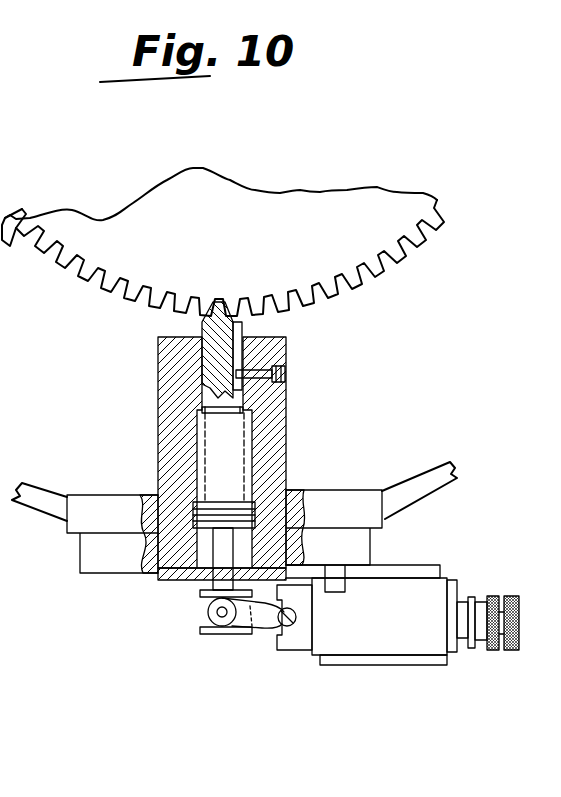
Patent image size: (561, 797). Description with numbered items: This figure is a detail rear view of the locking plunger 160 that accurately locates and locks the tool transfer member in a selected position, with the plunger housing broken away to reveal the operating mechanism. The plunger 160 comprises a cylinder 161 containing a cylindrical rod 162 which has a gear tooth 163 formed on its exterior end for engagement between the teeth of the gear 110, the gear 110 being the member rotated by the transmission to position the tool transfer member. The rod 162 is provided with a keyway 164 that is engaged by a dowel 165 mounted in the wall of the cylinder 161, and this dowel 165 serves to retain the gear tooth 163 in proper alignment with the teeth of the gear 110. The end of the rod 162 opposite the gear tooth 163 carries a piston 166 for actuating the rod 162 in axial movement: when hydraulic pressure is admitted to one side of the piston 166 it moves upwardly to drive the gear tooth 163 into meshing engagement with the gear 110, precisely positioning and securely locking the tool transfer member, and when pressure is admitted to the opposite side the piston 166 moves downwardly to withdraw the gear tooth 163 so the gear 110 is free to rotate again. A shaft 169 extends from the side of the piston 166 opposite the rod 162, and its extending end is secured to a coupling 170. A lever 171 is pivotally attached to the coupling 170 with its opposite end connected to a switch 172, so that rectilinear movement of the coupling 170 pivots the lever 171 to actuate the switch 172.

The gear 110 is at (348, 215).
The plunger 160 is at (234, 458).
The cylinder 161 is at (268, 446).
The cylindrical rod 162 is at (215, 433).
The gear tooth 163 is at (219, 300).
The keyway 164 is at (243, 330).
The dowel 165 is at (287, 378).
The piston 166 is at (228, 503).
The shaft 169 is at (218, 540).
The coupling 170 is at (205, 636).
The lever 171 is at (252, 614).
The switch 172 is at (383, 640).